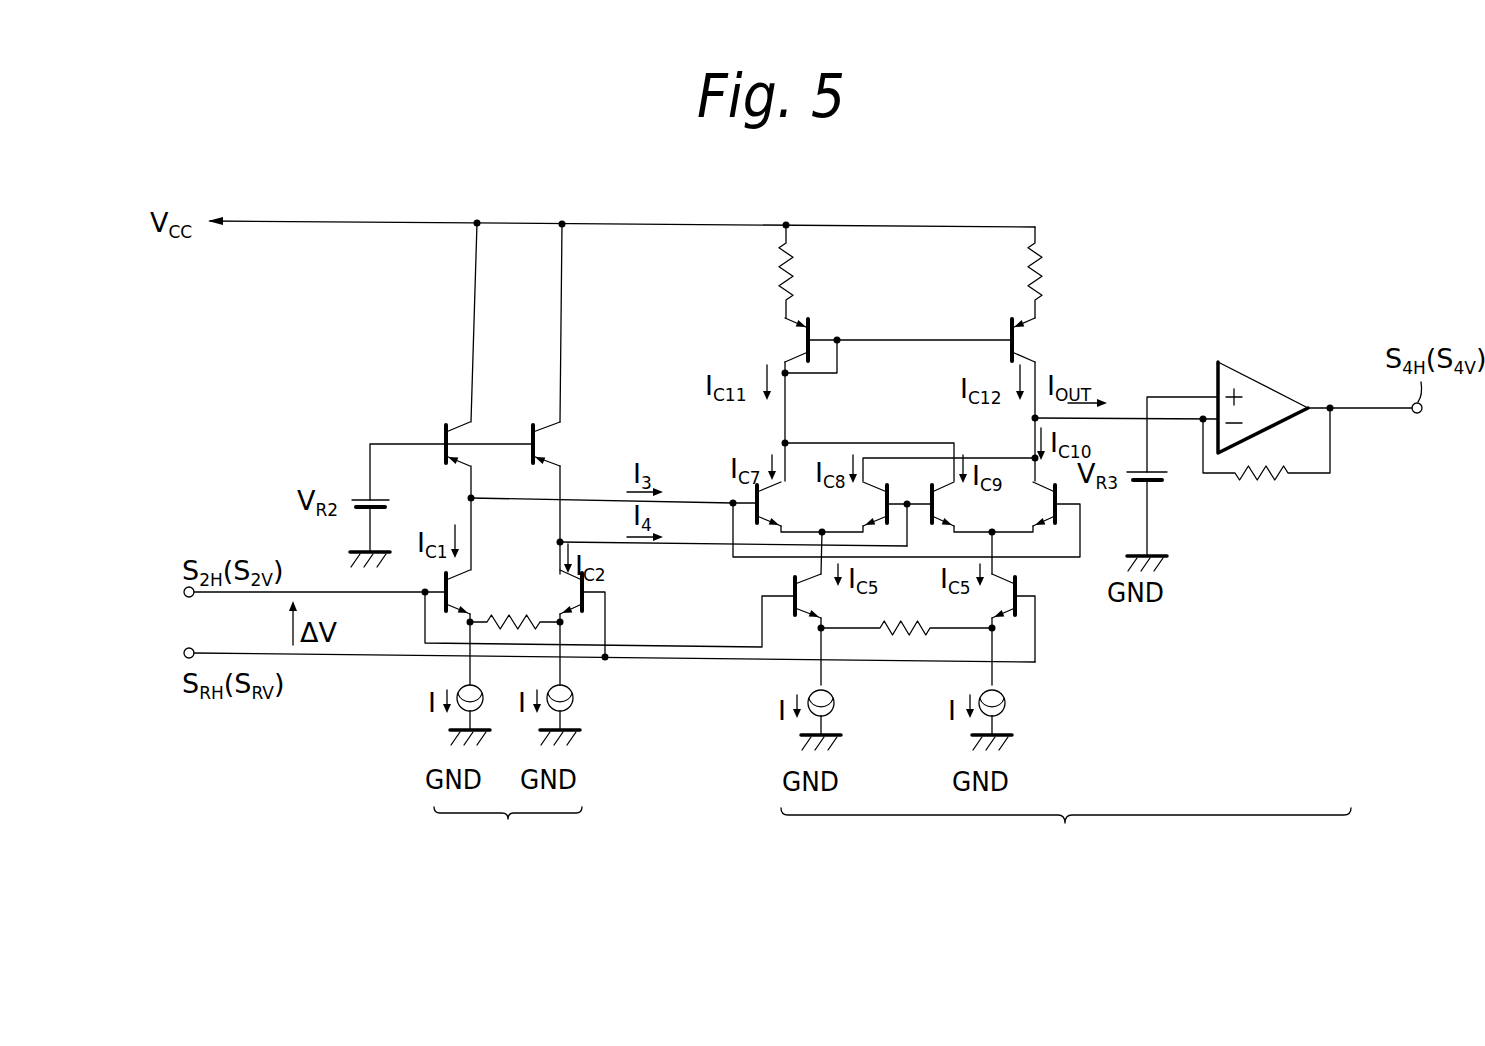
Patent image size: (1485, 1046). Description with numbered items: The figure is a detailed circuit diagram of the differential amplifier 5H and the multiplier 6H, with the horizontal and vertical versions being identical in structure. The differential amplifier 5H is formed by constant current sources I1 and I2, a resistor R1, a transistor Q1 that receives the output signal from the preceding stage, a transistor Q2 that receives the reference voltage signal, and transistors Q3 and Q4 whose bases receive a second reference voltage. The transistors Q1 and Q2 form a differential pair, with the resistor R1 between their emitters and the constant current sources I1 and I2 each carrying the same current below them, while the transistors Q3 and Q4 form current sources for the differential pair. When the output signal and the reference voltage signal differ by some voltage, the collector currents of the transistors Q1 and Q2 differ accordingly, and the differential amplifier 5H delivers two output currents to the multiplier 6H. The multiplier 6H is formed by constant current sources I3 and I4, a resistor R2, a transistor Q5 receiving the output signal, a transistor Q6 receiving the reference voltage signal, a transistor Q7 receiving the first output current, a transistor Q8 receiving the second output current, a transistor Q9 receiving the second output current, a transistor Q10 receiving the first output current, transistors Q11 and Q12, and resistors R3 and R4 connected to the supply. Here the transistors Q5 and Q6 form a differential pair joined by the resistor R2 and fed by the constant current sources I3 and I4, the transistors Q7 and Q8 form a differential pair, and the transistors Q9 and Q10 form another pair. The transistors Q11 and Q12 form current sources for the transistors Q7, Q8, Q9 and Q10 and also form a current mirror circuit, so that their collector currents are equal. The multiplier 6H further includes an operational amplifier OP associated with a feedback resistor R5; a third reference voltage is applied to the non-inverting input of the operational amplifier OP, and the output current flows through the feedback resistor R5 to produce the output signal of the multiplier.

The transistor Q1 is at (474, 592).
The transistor Q2 is at (552, 592).
The transistor Q3 is at (480, 453).
The transistor Q4 is at (568, 444).
The transistor Q5 is at (827, 599).
The transistor Q6 is at (983, 599).
The transistor Q7 is at (789, 504).
The transistor Q8 is at (855, 504).
The transistor Q9 is at (961, 504).
The transistor Q10 is at (1087, 504).
The transistor Q11 is at (762, 340).
The transistor Q12 is at (1055, 340).
The resistor R1 is at (509, 613).
The resistor R2 is at (906, 612).
The resistor R3 is at (811, 271).
The resistor R4 is at (1060, 272).
The feedback resistor R5 is at (1266, 467).
The constant current source I1 is at (477, 689).
The constant current source I2 is at (567, 689).
The constant current source I3 is at (829, 695).
The constant current source I4 is at (1000, 695).
The operational amplifier OP is at (1263, 378).
The differential amplifier 5H is at (508, 834).
The multiplier 6H is at (1066, 839).